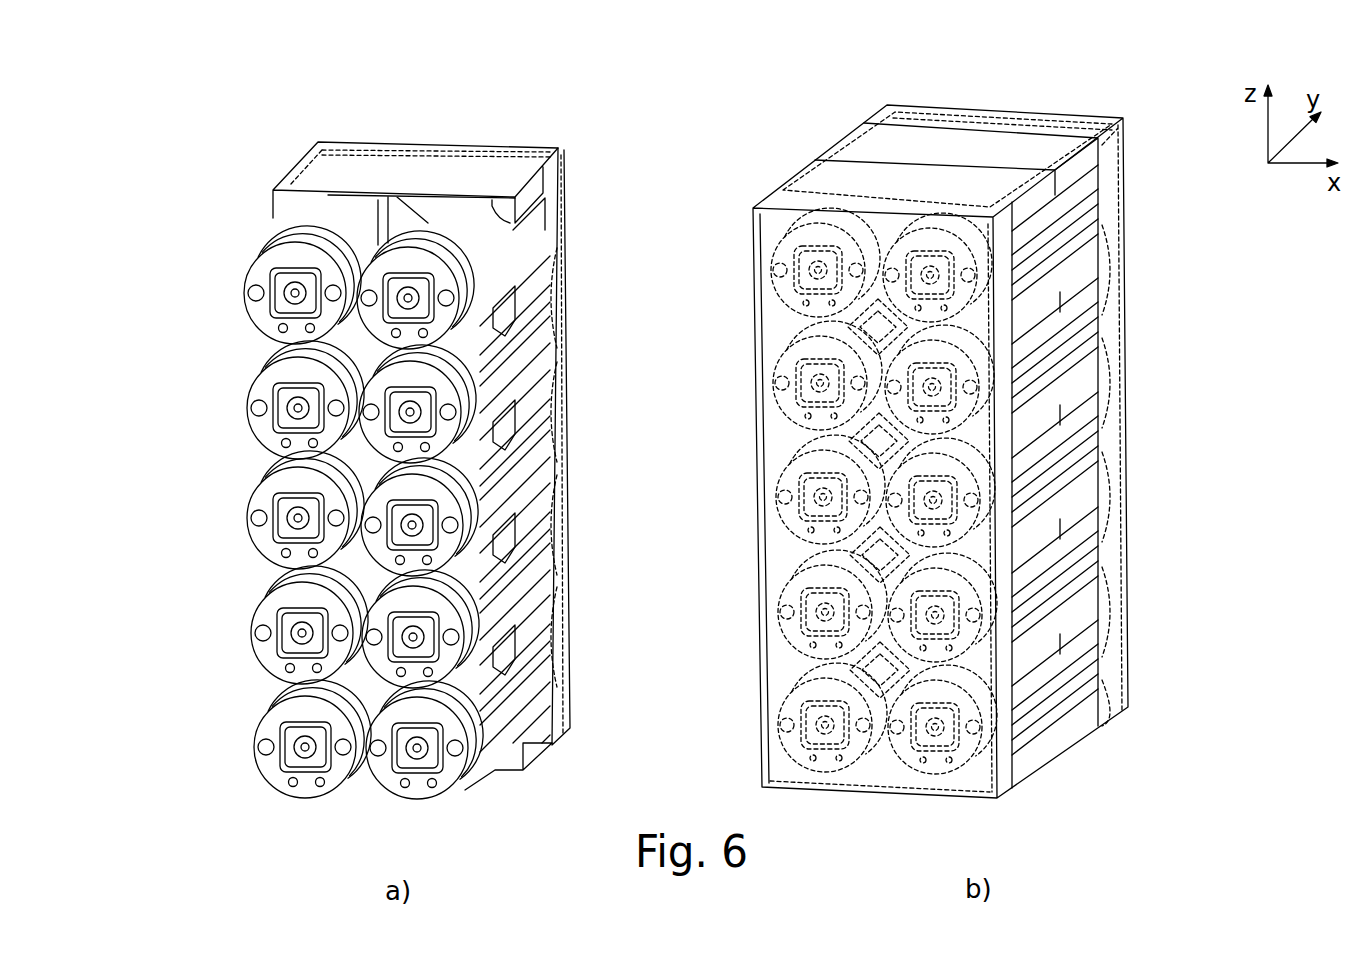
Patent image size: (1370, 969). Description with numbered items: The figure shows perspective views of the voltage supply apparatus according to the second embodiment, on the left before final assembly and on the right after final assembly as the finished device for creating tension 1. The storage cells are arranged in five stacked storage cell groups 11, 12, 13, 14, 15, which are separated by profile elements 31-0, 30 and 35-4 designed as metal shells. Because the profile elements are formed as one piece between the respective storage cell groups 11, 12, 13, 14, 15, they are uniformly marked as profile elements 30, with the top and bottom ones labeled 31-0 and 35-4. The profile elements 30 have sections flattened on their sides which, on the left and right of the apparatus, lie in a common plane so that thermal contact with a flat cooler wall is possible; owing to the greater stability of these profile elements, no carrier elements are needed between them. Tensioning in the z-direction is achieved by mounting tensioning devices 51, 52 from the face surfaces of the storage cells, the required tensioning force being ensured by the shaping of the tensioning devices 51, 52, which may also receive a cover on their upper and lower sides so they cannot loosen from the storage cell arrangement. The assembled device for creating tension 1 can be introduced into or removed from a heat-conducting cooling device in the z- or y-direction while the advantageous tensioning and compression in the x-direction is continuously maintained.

The device for creating tension 1 is at (440, 107).
The storage cell group 11 is at (192, 292).
The storage cell group 12 is at (192, 395).
The storage cell group 13 is at (192, 508).
The storage cell group 14 is at (192, 620).
The storage cell group 15 is at (192, 740).
The profile element 30 is at (553, 330).
The profile element 31-0 is at (537, 217).
The profile element 35-4 is at (480, 785).
The tensioning device 51 is at (930, 790).
The tensioning device 52 is at (473, 158).